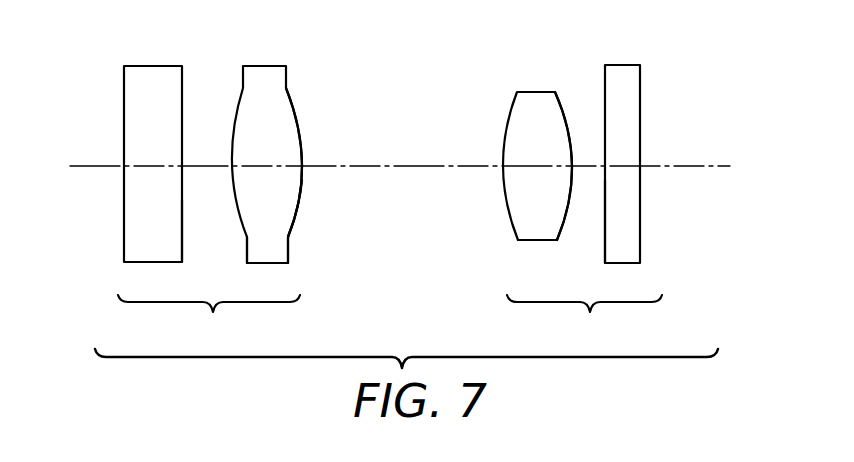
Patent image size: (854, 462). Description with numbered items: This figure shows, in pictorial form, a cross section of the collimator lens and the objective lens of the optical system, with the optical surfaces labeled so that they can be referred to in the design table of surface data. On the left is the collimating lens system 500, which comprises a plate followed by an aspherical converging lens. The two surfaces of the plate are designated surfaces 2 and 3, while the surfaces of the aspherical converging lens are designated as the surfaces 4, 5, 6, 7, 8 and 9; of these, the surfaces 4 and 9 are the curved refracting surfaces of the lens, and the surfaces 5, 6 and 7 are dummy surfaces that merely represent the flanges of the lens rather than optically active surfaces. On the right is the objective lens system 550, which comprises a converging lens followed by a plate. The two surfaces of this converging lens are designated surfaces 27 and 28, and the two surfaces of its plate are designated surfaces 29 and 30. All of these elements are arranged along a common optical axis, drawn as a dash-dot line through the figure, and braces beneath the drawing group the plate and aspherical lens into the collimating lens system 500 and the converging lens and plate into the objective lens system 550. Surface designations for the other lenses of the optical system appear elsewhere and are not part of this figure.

The plate surface 2 is at (124, 234).
The plate surface 3 is at (183, 250).
The curved lens surface 4 is at (235, 200).
The dummy surface 5 is at (247, 252).
The dummy surface 6 is at (247, 252).
The dummy surface 7 is at (288, 253).
The lens surface 8 is at (288, 253).
The curved lens surface 9 is at (301, 186).
The lens surface 27 is at (503, 183).
The lens surface 28 is at (563, 118).
The plate surface 29 is at (605, 240).
The plate surface 30 is at (640, 203).
The collimating lens system 500 is at (209, 317).
The objective lens system 550 is at (584, 317).